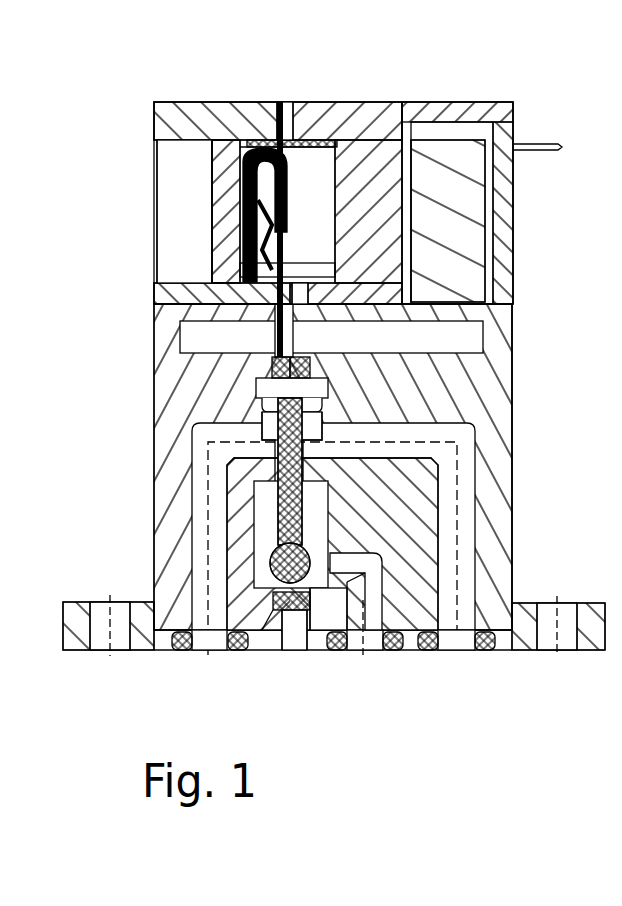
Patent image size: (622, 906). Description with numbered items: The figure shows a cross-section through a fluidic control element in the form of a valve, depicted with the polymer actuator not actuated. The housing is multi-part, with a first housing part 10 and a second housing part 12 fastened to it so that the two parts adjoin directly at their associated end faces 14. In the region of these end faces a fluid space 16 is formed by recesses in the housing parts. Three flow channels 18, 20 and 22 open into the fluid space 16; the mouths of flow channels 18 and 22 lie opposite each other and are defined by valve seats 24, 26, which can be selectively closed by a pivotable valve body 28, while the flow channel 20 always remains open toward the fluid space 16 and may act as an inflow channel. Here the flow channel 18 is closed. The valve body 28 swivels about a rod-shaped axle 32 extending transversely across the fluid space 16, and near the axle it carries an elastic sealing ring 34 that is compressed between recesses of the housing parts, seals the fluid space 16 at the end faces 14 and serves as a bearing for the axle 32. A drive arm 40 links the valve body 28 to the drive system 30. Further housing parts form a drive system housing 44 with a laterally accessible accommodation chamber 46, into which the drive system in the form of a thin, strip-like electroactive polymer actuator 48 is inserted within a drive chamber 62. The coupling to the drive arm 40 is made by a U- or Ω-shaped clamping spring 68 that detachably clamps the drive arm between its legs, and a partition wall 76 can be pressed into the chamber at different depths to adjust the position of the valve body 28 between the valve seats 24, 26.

The first housing part 10 is at (155, 415).
The second housing part 12 is at (512, 418).
The end faces 14 is at (299, 648).
The fluid space 16 is at (262, 525).
The flow channel 18 is at (205, 578).
The flow channel 20 is at (372, 615).
The flow channel 22 is at (463, 576).
The valve seat 24 is at (264, 410).
The valve seat 26 is at (328, 409).
The valve body 28 is at (265, 495).
The drive system 30 is at (323, 96).
The axle 32 is at (258, 598).
The sealing ring 34 is at (273, 366).
The drive arm 40 is at (232, 290).
The drive system housing 44 is at (356, 140).
The accommodation chamber 46 is at (178, 157).
The electroactive polymer actuator 48 is at (280, 122).
The drive chamber 62 is at (430, 128).
The clamping spring 68 is at (248, 128).
The partition wall 76 is at (215, 213).